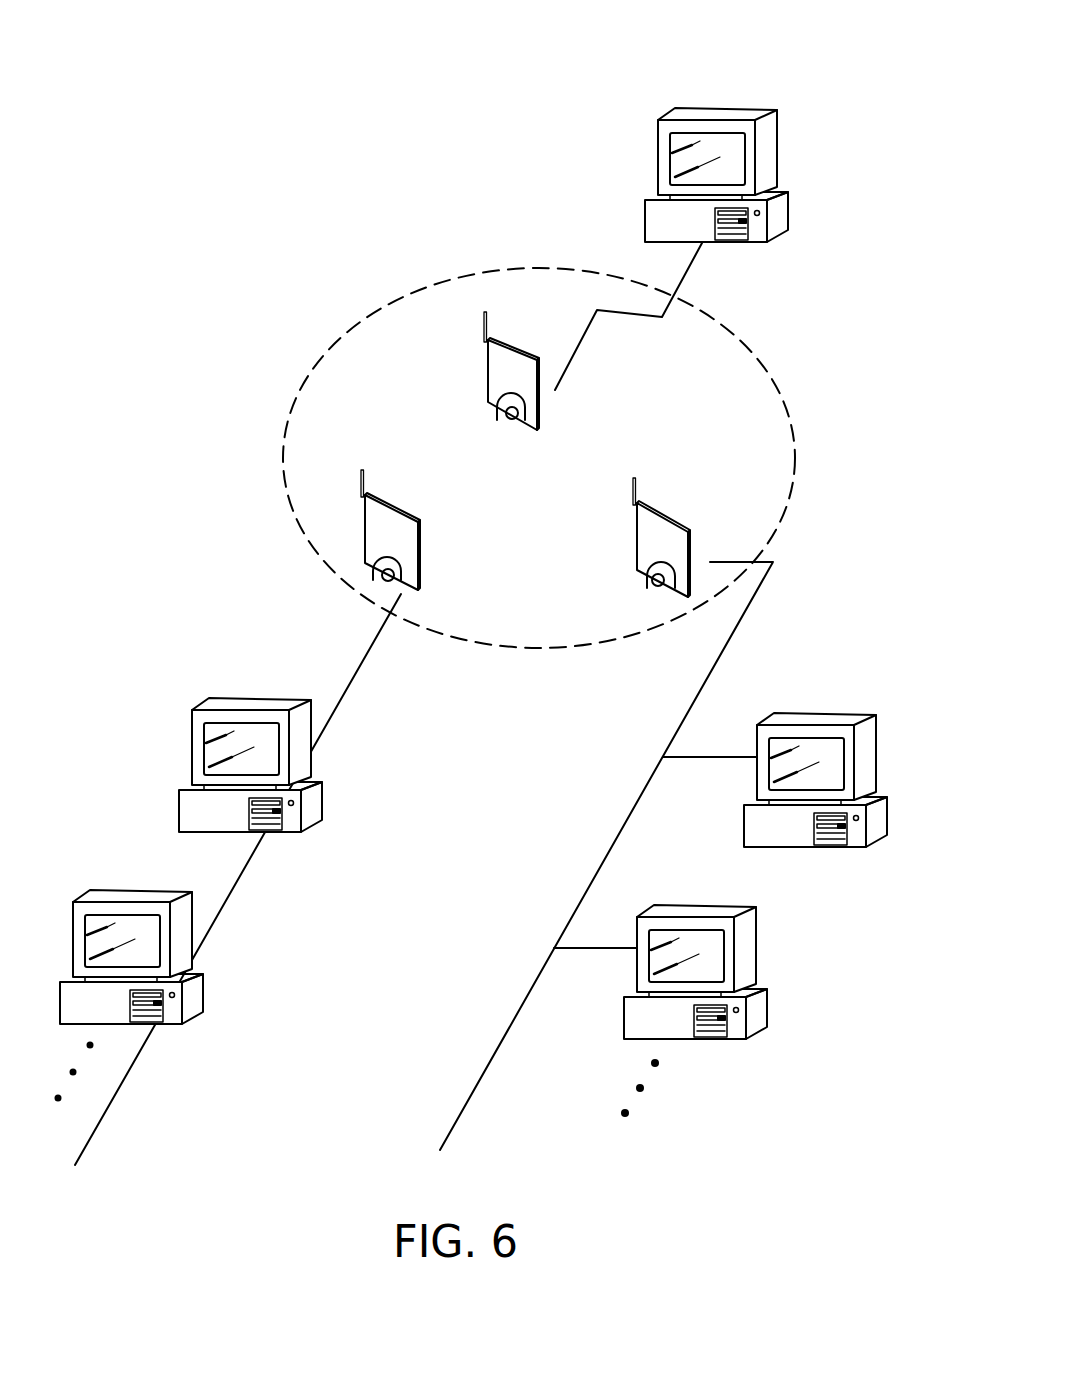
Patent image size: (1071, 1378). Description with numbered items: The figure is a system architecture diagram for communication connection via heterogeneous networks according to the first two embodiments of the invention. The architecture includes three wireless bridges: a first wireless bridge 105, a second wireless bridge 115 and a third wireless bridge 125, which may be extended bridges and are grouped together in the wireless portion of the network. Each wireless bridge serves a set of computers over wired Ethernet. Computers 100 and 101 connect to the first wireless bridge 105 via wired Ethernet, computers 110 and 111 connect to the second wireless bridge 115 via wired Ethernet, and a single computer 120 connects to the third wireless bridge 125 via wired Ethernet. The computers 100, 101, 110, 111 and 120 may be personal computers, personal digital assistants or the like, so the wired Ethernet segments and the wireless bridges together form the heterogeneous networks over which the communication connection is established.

The computer 100 is at (830, 722).
The computer 101 is at (710, 915).
The first wireless bridge 105 is at (637, 535).
The computer 110 is at (263, 708).
The computer 111 is at (145, 900).
The second wireless bridge 115 is at (418, 575).
The computer 120 is at (731, 118).
The third wireless bridge 125 is at (537, 413).